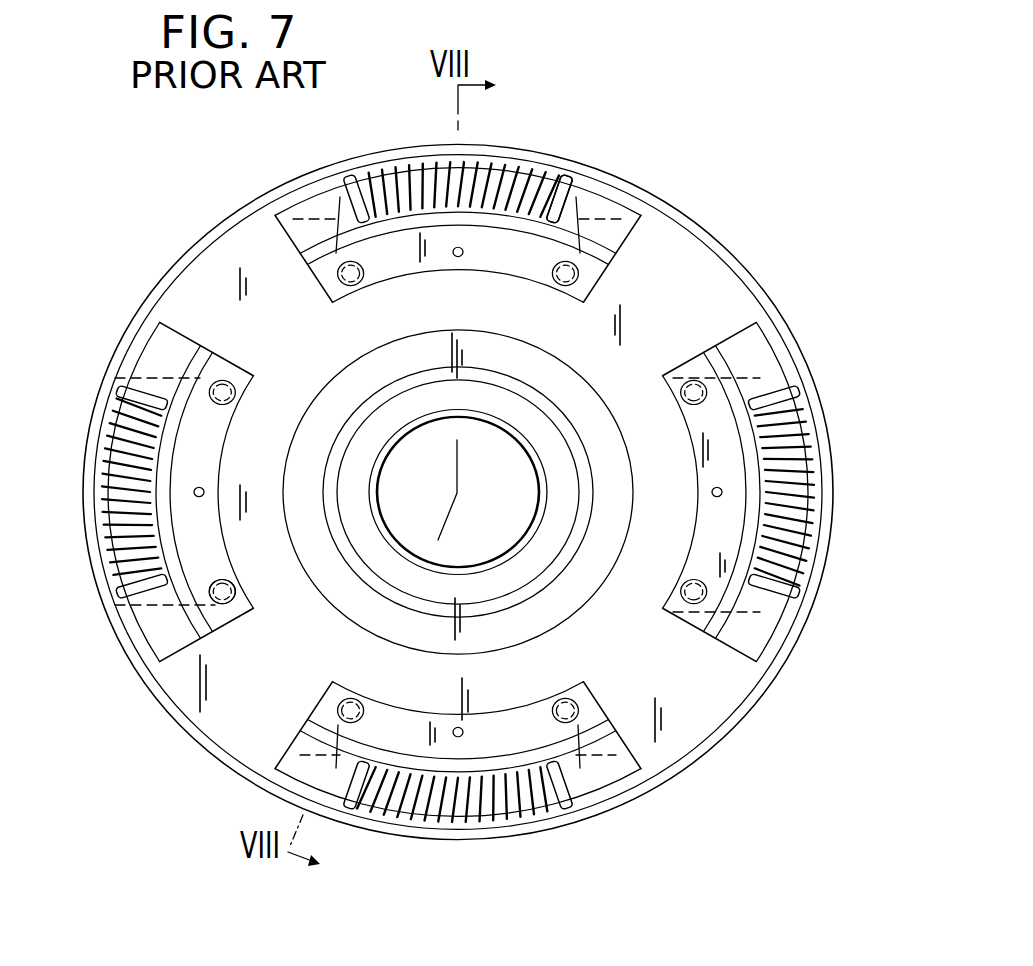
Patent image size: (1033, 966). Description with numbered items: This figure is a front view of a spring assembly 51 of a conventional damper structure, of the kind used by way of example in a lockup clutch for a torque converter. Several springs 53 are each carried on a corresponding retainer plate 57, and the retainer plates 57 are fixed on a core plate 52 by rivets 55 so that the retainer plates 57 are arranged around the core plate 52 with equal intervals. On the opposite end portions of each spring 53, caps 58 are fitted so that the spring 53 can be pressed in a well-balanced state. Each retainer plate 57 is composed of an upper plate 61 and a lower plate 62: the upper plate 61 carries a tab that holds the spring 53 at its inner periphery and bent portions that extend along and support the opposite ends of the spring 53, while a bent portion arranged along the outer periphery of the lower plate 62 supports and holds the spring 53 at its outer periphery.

The spring assembly 51 is at (642, 118).
The core plate 52 is at (217, 278).
The spring 53 is at (488, 162).
The rivet 55 is at (227, 380).
The retainer plate 57 is at (307, 220).
The cap 58 is at (592, 207).
The upper plate 61 is at (752, 348).
The lower plate 62 is at (793, 388).